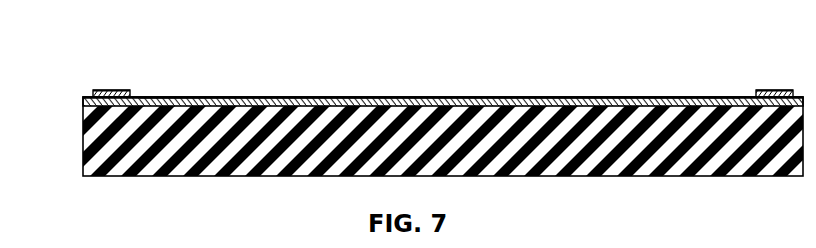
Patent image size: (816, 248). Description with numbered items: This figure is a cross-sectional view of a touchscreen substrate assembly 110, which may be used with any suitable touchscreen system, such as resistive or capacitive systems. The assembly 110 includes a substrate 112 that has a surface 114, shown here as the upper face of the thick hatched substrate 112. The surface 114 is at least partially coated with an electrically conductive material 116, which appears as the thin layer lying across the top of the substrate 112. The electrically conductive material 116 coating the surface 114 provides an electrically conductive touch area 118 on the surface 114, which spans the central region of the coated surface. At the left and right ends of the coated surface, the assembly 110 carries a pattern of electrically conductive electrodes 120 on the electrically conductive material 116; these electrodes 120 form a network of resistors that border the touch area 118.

The touchscreen substrate assembly 110 is at (102, 58).
The substrate 112 is at (460, 148).
The surface 114 is at (382, 97).
The electrically conductive material 116 is at (541, 97).
The electrically conductive touch area 118 is at (273, 89).
The electrically conductive electrodes 120 is at (115, 88).